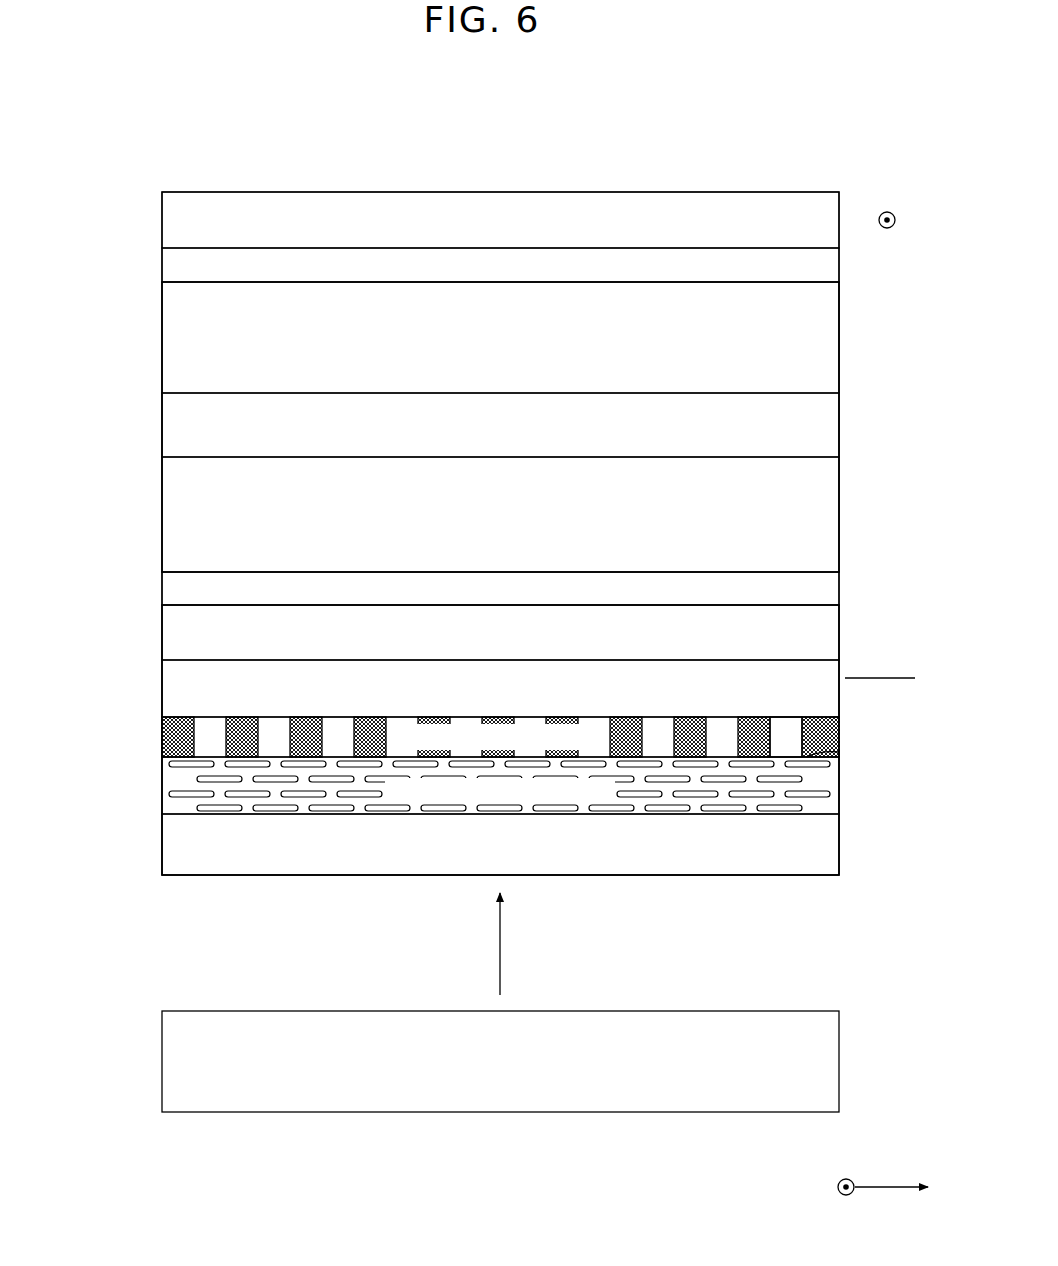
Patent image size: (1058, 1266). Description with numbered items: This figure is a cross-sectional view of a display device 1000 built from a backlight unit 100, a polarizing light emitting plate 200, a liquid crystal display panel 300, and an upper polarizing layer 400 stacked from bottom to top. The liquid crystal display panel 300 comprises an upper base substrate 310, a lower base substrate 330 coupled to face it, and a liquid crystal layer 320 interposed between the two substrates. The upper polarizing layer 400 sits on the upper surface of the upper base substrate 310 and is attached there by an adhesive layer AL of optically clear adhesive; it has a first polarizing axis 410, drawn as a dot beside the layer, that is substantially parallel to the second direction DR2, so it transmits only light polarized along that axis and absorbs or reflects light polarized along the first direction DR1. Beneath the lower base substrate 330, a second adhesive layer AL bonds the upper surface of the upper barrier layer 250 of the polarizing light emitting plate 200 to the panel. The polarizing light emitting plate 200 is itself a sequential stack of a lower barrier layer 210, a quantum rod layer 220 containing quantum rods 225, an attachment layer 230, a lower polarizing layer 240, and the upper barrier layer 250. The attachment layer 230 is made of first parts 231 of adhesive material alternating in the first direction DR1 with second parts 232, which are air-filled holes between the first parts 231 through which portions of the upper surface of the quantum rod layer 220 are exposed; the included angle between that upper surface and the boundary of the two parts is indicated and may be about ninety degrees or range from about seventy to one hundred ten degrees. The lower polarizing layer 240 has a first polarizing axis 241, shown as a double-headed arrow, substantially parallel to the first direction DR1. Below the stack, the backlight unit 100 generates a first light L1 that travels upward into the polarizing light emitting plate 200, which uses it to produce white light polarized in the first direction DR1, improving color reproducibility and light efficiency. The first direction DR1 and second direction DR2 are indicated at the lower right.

The display device 1000 is at (745, 152).
The first polarizing axis 410 is at (890, 208).
The upper polarizing layer 400 is at (170, 217).
The adhesive layer AL is at (170, 262).
The liquid crystal display panel 300 is at (427, 427).
The upper base substrate 310 is at (170, 335).
The liquid crystal layer 320 is at (170, 423).
The lower base substrate 330 is at (459, 514).
The polarizing light emitting plate 200 is at (475, 740).
The upper barrier layer 250 is at (170, 629).
The lower polarizing layer 240 is at (170, 685).
The first polarizing axis 241 is at (843, 678).
The attachment layer 230 is at (507, 732).
The first part 231 is at (839, 732).
The second part 232 is at (795, 727).
The quantum rod layer 220 is at (502, 785).
The quantum rod 225 is at (795, 809).
The lower barrier layer 210 is at (459, 844).
The backlight unit 100 is at (829, 1062).
The first light L1 is at (516, 944).
The first direction DR1 is at (896, 1171).
The second direction DR2 is at (846, 1175).